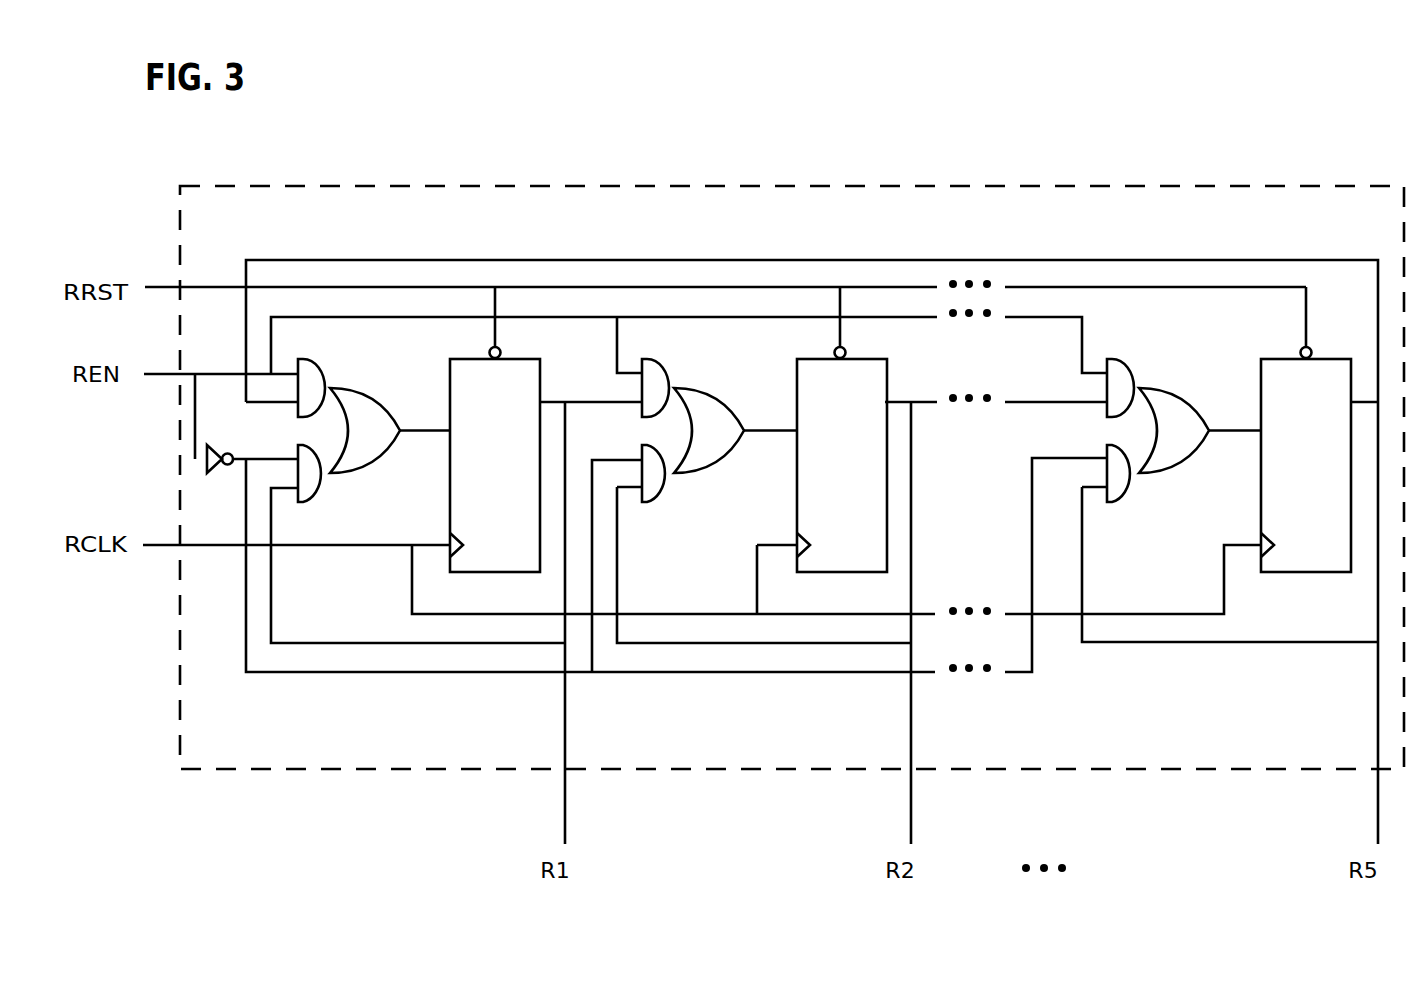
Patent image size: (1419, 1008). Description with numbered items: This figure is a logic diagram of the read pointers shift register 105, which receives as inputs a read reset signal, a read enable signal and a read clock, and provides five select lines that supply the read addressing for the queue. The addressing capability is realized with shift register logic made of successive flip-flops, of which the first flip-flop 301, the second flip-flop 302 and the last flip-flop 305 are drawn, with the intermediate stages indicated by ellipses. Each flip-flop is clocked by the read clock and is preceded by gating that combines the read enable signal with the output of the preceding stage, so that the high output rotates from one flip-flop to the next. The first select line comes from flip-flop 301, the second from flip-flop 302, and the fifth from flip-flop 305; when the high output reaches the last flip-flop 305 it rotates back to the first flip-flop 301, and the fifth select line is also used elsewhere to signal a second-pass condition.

The read pointers shift register 105 is at (792, 477).
The flip-flop 301 is at (495, 466).
The flip-flop 302 is at (842, 466).
The flip-flop 305 is at (1306, 466).